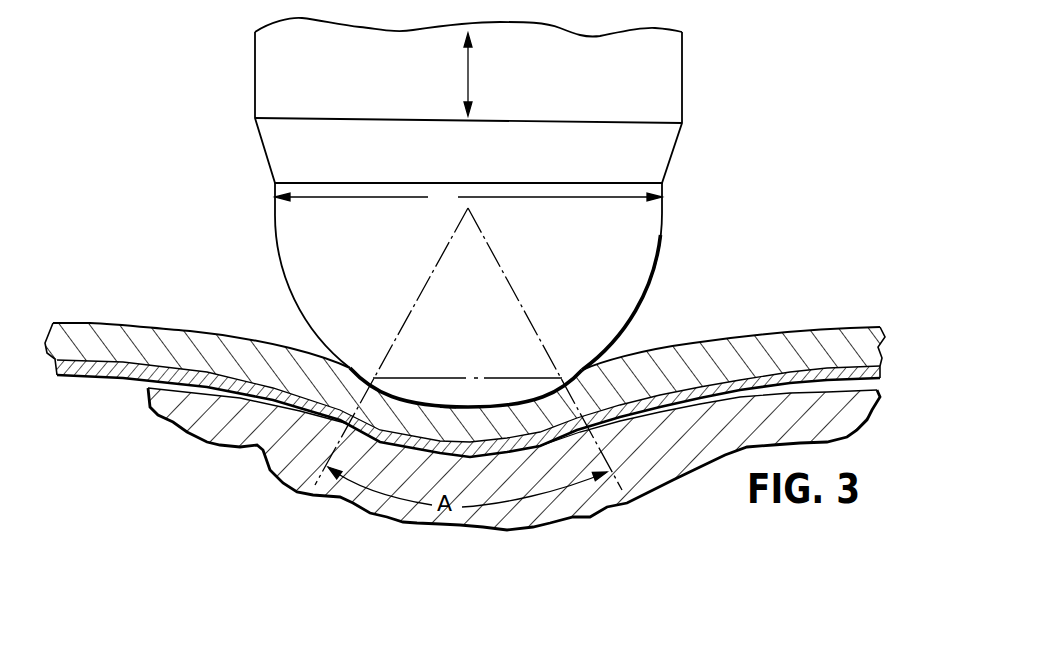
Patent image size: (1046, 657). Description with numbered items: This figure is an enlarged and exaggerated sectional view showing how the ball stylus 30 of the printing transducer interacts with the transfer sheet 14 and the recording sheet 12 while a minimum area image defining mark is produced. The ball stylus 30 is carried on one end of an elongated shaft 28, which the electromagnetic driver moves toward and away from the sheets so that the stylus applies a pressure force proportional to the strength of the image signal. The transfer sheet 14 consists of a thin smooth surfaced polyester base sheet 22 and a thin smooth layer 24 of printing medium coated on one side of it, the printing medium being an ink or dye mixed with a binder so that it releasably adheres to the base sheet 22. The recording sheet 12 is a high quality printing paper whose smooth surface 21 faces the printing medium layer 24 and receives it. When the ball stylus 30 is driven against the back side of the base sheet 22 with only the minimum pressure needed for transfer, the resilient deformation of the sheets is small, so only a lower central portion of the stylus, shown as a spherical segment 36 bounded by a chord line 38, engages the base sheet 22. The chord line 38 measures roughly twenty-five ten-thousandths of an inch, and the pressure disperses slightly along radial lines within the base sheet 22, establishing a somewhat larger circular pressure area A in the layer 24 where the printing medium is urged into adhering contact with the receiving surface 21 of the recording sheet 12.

The recording sheet 12 is at (147, 412).
The transfer sheet 14 is at (897, 308).
The smooth surface 21 is at (878, 383).
The base sheet 22 is at (484, 348).
The layer of printing medium 24 is at (883, 366).
The shaft 28 is at (673, 57).
The ball stylus 30 is at (638, 227).
The spherical segment 36 is at (448, 405).
The chord line 38 is at (513, 380).